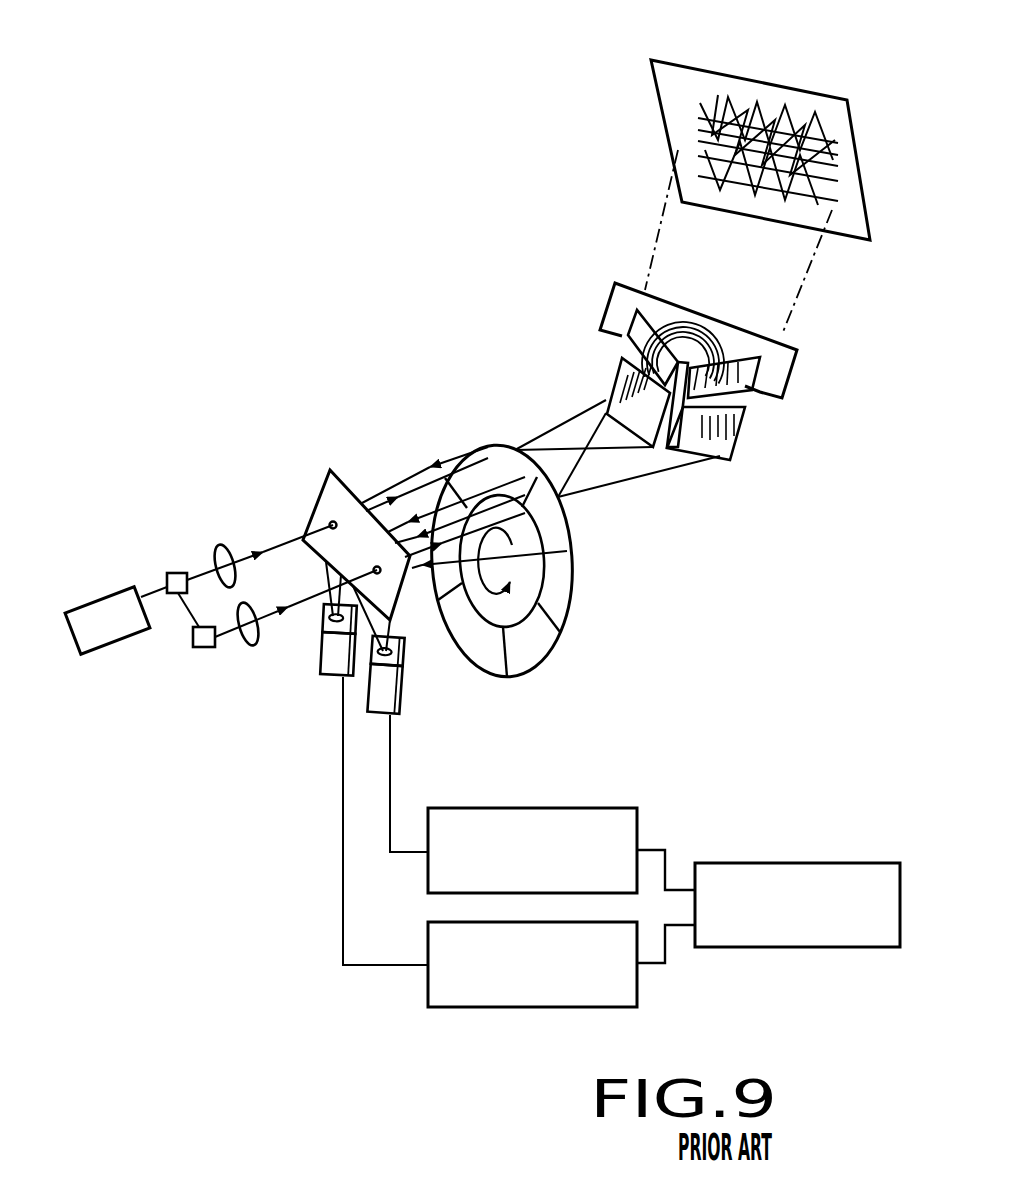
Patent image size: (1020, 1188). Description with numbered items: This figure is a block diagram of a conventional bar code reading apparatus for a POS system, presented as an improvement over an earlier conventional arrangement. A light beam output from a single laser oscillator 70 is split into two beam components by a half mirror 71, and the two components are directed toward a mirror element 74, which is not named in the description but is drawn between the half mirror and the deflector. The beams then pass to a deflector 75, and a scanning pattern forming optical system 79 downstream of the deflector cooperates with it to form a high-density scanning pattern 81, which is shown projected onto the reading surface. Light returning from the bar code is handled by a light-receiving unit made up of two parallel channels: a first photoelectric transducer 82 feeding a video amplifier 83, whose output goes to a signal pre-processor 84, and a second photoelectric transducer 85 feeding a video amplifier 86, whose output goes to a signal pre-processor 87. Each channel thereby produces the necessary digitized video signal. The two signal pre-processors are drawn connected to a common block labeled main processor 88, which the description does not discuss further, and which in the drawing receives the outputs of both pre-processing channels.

The laser oscillator 70 is at (77, 640).
The half mirror 71 is at (177, 573).
The mirror with apertures 74 is at (318, 497).
The deflector 75 is at (487, 445).
The scanning pattern forming optical system 79 is at (745, 452).
The high-density scanning pattern 81 is at (663, 128).
The photoelectric transducer 82 is at (321, 636).
The video amplifier 83 is at (323, 662).
The signal pre-processor 84 is at (440, 1007).
The photoelectric transducer 85 is at (404, 646).
The video amplifier 86 is at (405, 714).
The signal pre-processor 87 is at (612, 808).
The main processor 88 is at (878, 863).